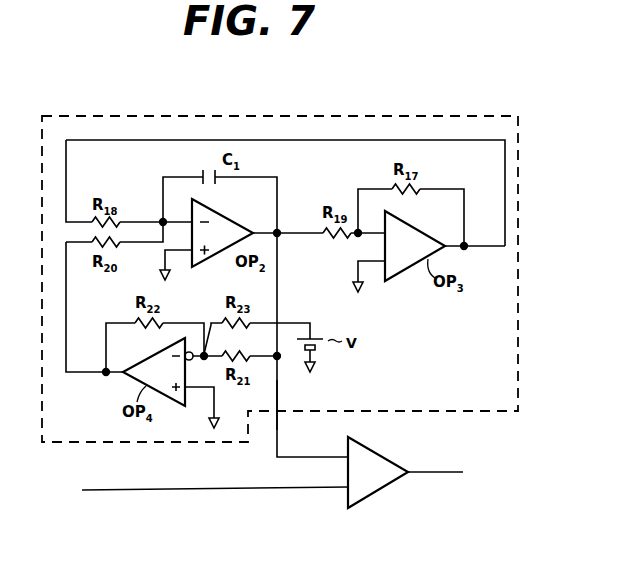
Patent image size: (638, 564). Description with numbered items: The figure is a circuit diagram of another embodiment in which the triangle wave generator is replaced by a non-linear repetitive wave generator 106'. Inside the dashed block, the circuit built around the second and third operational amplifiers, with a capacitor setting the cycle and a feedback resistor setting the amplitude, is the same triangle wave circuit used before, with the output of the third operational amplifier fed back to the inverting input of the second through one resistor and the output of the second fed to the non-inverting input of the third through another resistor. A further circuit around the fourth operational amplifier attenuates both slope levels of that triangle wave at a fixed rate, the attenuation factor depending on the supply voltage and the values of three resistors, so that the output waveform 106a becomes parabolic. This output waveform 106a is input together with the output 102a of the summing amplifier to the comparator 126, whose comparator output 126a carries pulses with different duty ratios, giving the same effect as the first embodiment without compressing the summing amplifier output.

The non-linear repetitive wave generator 106' is at (318, 257).
The output waveform of the non-linear repetitive wave generator 106a is at (280, 406).
The comparator 126 is at (388, 453).
The comparator output 126a is at (437, 470).
The output of the summing amplifier 102a is at (215, 502).